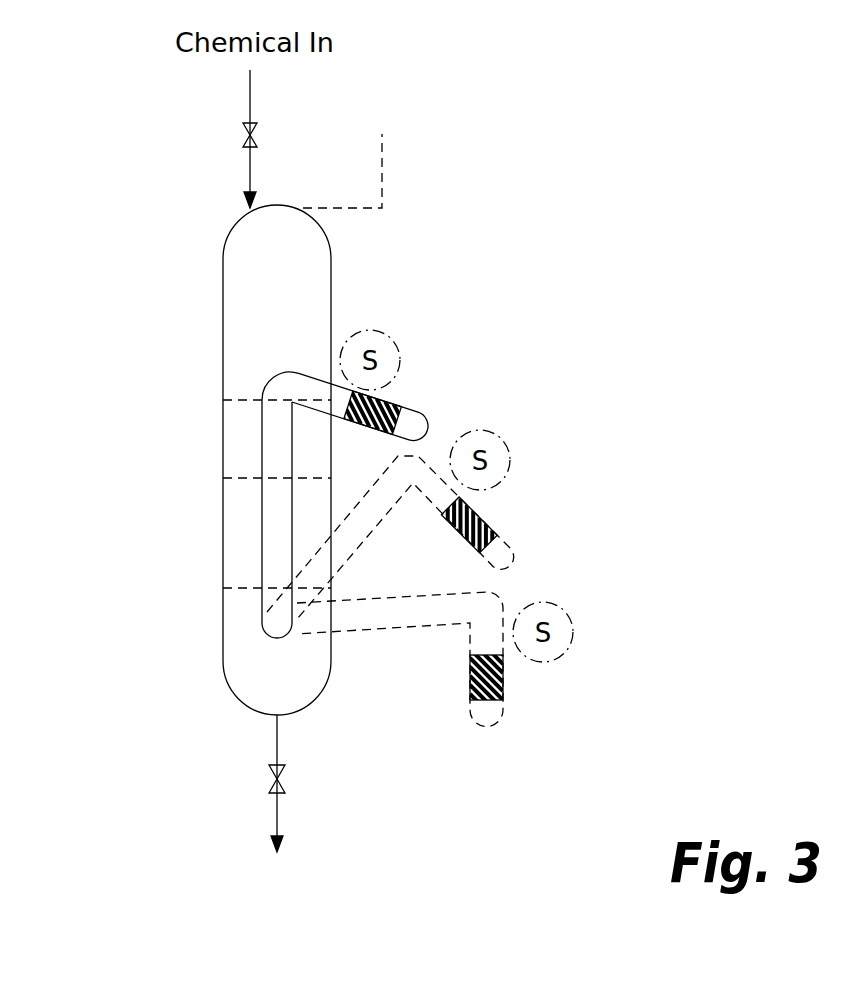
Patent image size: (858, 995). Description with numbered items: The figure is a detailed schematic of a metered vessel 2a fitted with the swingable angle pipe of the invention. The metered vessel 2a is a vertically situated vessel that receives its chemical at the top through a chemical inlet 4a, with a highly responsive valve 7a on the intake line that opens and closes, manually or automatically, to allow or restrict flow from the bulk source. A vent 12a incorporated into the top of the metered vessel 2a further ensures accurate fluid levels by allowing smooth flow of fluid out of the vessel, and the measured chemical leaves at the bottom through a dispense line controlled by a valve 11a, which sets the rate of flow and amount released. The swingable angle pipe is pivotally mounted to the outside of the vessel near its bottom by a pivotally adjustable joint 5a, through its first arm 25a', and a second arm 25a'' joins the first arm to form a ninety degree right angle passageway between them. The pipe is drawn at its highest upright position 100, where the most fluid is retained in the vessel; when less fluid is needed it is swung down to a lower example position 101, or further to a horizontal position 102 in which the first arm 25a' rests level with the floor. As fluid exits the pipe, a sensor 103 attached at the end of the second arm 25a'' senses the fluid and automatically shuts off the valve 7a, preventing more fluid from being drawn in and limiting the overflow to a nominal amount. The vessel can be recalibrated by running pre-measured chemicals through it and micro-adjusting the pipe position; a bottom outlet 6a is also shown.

The metered vessel 2a is at (256, 460).
The chemical inlet 4a is at (225, 204).
The pivotally adjustable joint 5a is at (249, 641).
The outlet 6a is at (293, 783).
The valve 7a is at (270, 138).
The valve 11a is at (305, 792).
The vent 12a is at (404, 141).
The highest upright position 100 is at (249, 426).
The lower example position 101 is at (390, 537).
The horizontal position 102 is at (400, 659).
The sensor 103 is at (435, 554).
The first arm 25a' is at (199, 511).
The second arm 25a'' is at (345, 423).